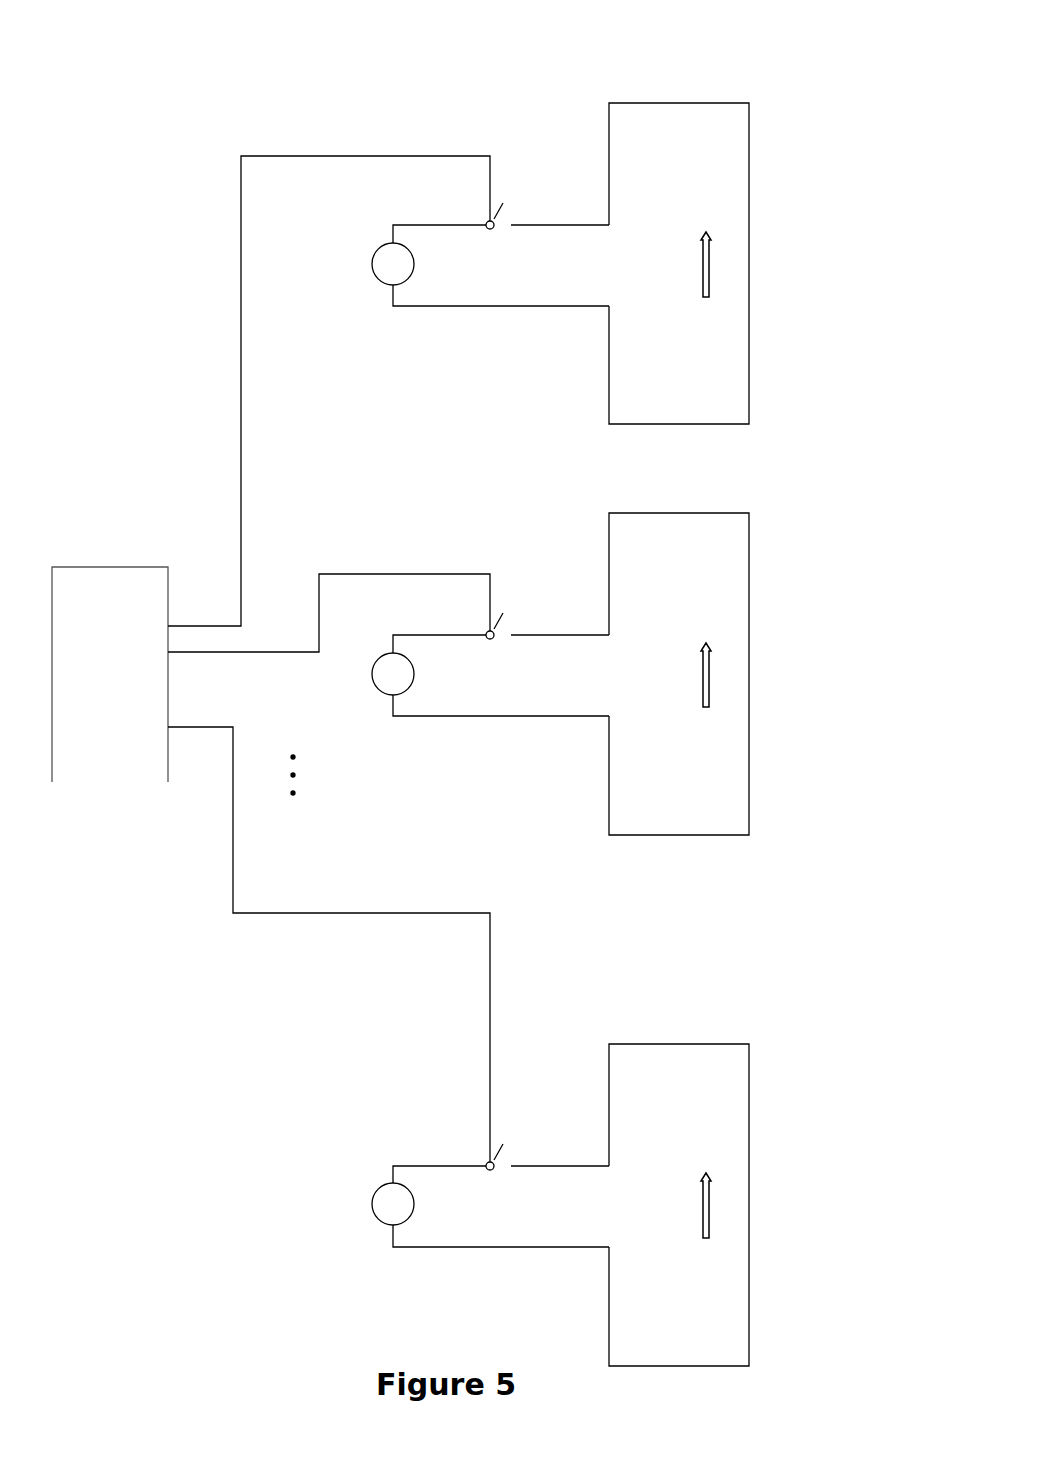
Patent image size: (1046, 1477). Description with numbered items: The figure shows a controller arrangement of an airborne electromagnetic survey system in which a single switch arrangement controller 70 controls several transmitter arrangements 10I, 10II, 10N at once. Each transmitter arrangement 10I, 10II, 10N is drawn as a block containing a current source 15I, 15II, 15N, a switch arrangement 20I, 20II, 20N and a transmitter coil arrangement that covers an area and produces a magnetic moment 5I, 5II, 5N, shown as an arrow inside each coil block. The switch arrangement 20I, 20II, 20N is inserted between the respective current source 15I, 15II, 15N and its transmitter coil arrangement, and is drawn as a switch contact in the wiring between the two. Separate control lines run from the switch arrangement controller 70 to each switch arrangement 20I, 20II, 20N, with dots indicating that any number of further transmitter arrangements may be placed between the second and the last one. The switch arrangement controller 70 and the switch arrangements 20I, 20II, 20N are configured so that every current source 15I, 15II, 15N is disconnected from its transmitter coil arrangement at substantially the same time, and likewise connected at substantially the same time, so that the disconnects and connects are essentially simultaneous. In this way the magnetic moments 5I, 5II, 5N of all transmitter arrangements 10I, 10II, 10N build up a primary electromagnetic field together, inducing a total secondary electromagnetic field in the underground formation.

The switch arrangement controller 70 is at (110, 674).
The first transmitter arrangement 10I is at (585, 229).
The first current source 15I is at (366, 290).
The first switch arrangement 20I is at (530, 172).
The first magnetic moment 5I is at (735, 340).
The second transmitter arrangement 10II is at (549, 637).
The second current source 15II is at (366, 718).
The second switch arrangement 20II is at (518, 602).
The second magnetic moment 5II is at (735, 742).
The Nth transmitter arrangement 10N is at (543, 1151).
The Nth current source 15N is at (366, 1226).
The Nth switch arrangement 20N is at (557, 1112).
The Nth magnetic moment 5N is at (736, 1268).